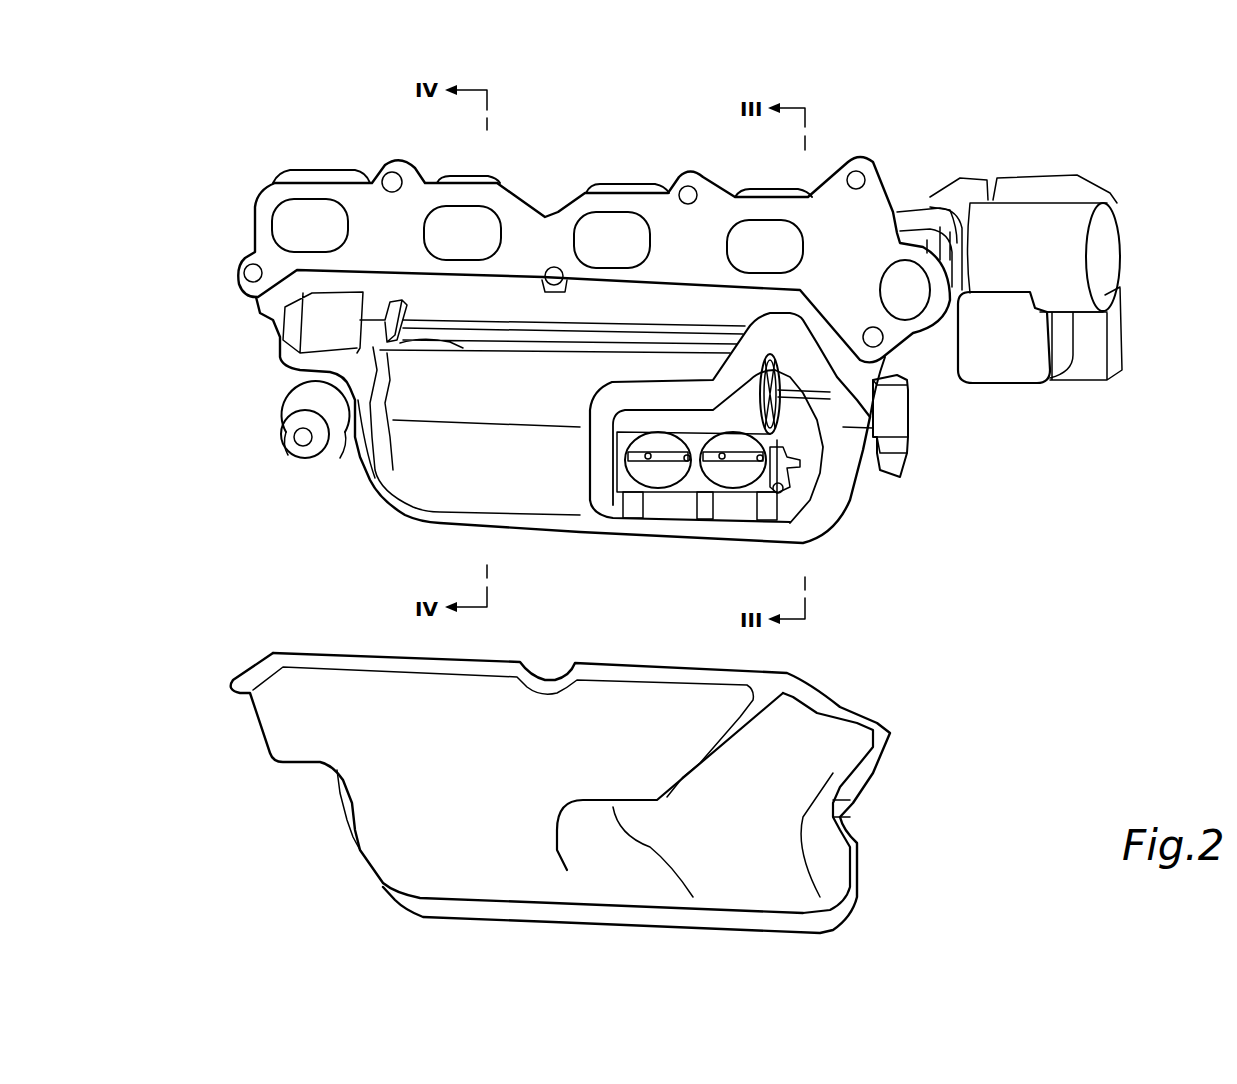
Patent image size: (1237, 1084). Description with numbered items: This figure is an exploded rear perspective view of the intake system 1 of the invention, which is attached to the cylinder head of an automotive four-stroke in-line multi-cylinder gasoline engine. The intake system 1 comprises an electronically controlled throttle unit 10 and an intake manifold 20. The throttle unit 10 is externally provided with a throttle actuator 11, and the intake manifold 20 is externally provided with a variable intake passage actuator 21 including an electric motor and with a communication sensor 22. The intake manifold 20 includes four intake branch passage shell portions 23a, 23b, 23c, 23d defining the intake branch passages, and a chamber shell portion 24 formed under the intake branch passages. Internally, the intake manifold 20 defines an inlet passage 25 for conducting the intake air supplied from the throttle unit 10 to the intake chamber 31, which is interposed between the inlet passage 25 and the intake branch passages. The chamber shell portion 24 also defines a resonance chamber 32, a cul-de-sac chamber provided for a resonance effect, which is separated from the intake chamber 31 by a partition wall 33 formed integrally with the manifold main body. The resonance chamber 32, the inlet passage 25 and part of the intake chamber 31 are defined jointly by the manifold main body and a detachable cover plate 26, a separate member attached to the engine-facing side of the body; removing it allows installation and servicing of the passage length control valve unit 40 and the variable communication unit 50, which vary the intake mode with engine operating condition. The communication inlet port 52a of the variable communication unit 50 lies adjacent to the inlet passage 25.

The intake system 1 is at (876, 128).
The throttle unit 10 is at (1040, 213).
The throttle actuator 11 is at (1113, 330).
The intake manifold 20 is at (262, 184).
The variable intake passage actuator 21 is at (283, 445).
The communication sensor 22 is at (903, 417).
The intake branch passage shell portion 23a is at (333, 170).
The intake branch passage shell portion 23b is at (473, 176).
The intake branch passage shell portion 23c is at (627, 185).
The intake branch passage shell portion 23d is at (757, 187).
The chamber shell portion 24 is at (680, 533).
The inlet passage 25 is at (803, 417).
The cover plate 26 is at (820, 865).
The intake chamber 31 is at (653, 510).
The resonance chamber 32 is at (430, 490).
The partition wall 33 is at (593, 473).
The passage length control valve unit 40 is at (798, 517).
The variable communication unit 50 is at (495, 447).
The communication inlet port 52a is at (778, 387).